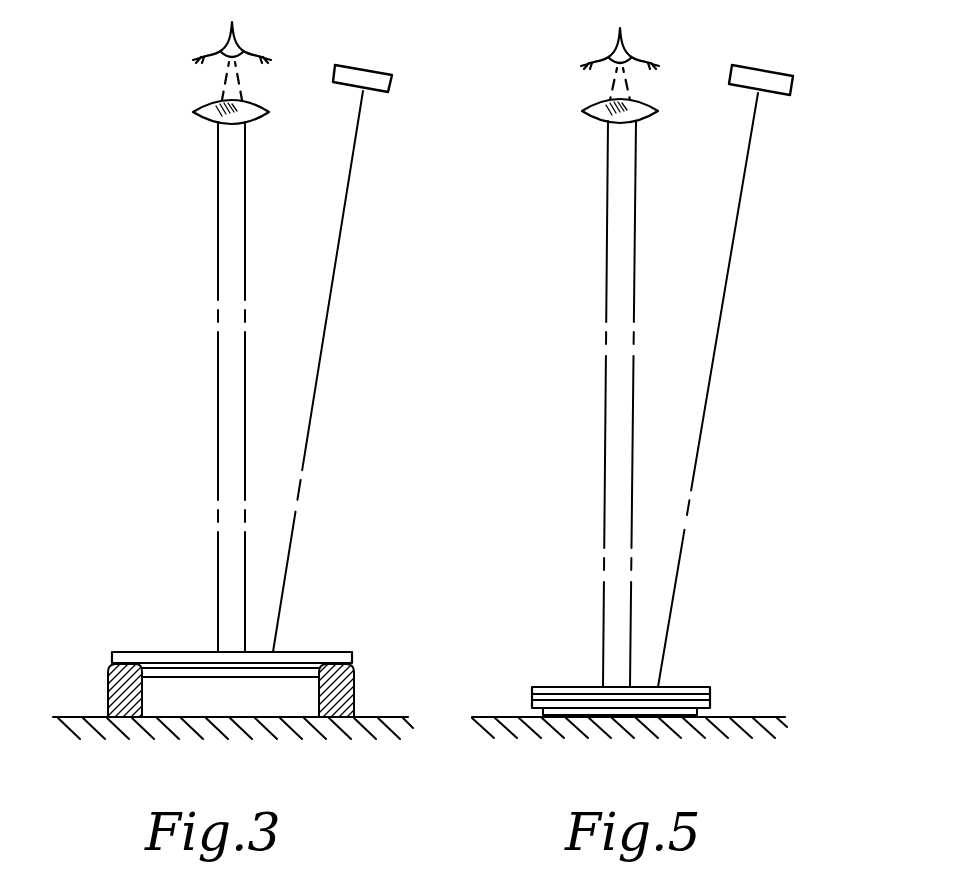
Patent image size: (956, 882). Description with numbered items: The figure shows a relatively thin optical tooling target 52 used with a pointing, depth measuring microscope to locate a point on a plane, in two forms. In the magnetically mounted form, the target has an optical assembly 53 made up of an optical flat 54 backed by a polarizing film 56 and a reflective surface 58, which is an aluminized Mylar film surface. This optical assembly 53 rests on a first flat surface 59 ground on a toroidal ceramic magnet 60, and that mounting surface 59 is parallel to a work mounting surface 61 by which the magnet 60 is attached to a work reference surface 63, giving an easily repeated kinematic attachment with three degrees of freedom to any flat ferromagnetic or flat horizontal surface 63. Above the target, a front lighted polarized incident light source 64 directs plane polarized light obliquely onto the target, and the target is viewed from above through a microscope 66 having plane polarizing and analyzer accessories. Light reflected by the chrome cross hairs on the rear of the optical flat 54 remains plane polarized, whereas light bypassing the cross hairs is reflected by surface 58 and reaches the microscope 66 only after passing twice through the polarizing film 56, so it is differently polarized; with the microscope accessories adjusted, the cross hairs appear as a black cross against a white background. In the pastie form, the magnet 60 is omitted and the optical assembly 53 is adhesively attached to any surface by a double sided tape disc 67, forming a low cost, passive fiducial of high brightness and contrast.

In FIG. 3, the tooling target 52 is at (104, 590).
In FIG. 5, the tooling target 52 is at (546, 603).
In FIG. 3, the optical assembly 53 is at (300, 638).
In FIG. 5, the optical assembly 53 is at (580, 668).
In FIG. 3, the optical flat 54 is at (150, 656).
In FIG. 5, the optical flat 54 is at (668, 690).
In FIG. 3, the polarizing film 56 is at (198, 666).
In FIG. 5, the polarizing film 56 is at (686, 697).
In FIG. 3, the reflective surface 58 is at (245, 678).
In FIG. 5, the reflective surface 58 is at (532, 706).
In FIG. 3, the first flat surface 59 is at (337, 652).
In FIG. 3, the toroidal ceramic magnet 60 is at (108, 697).
In FIG. 3, the work mounting surface 61 is at (356, 706).
In FIG. 3, the work reference surface 63 is at (250, 704).
In FIG. 3, the polarized incident light source 64 is at (368, 67).
In FIG. 5, the polarized incident light source 64 is at (768, 66).
In FIG. 3, the microscope 66 is at (207, 116).
In FIG. 5, the microscope 66 is at (598, 117).
In FIG. 5, the double sided tape disc 67 is at (698, 713).